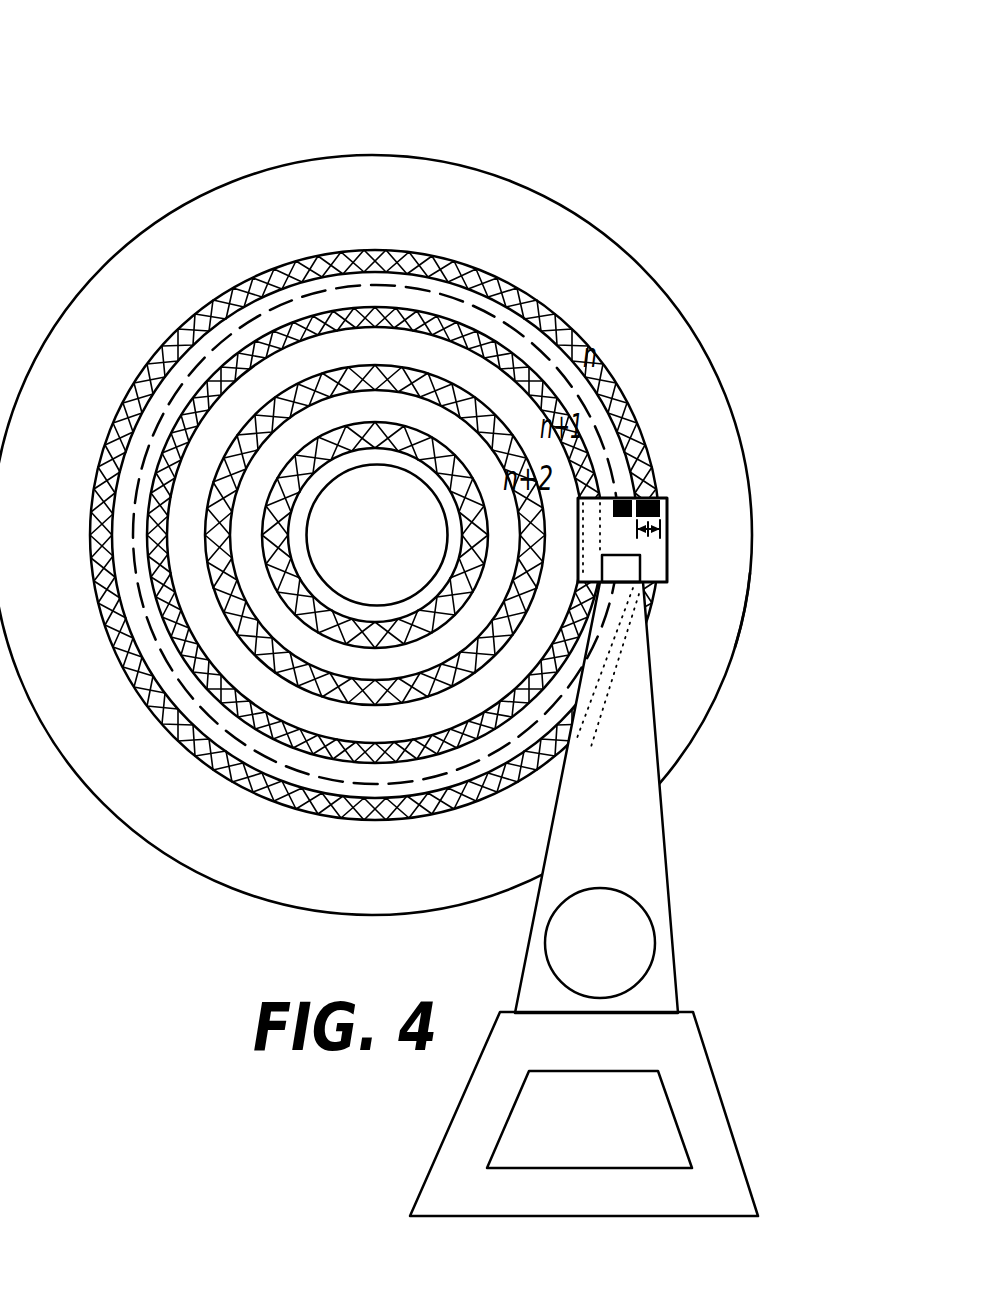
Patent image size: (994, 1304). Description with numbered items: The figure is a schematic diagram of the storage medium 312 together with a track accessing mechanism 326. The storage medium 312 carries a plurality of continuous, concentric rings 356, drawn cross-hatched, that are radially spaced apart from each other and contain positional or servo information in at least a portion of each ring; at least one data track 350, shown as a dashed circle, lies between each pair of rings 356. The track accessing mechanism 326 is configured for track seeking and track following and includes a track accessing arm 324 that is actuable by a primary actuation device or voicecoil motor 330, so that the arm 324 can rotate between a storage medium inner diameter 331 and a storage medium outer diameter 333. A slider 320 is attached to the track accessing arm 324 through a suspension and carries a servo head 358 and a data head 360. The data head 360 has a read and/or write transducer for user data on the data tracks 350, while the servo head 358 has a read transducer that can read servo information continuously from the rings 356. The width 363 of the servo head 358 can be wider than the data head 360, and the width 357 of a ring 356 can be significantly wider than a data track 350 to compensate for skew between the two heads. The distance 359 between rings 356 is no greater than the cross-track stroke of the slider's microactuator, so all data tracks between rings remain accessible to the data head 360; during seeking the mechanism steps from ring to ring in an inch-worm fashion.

The storage medium 312 is at (590, 223).
The slider 320 is at (668, 533).
The track accessing arm 324 is at (624, 821).
The track accessing mechanism 326 is at (691, 893).
The voicecoil motor 330 is at (729, 1113).
The storage medium inner diameter 331 is at (438, 563).
The storage medium outer diameter 333 is at (747, 613).
The data track 350 is at (437, 293).
The rings 356 is at (262, 529).
The width of a ring 357 is at (323, 410).
The servo head 358 is at (667, 498).
The distance between rings 359 is at (519, 387).
The data head 360 is at (633, 498).
The width of servo head 363 is at (647, 533).